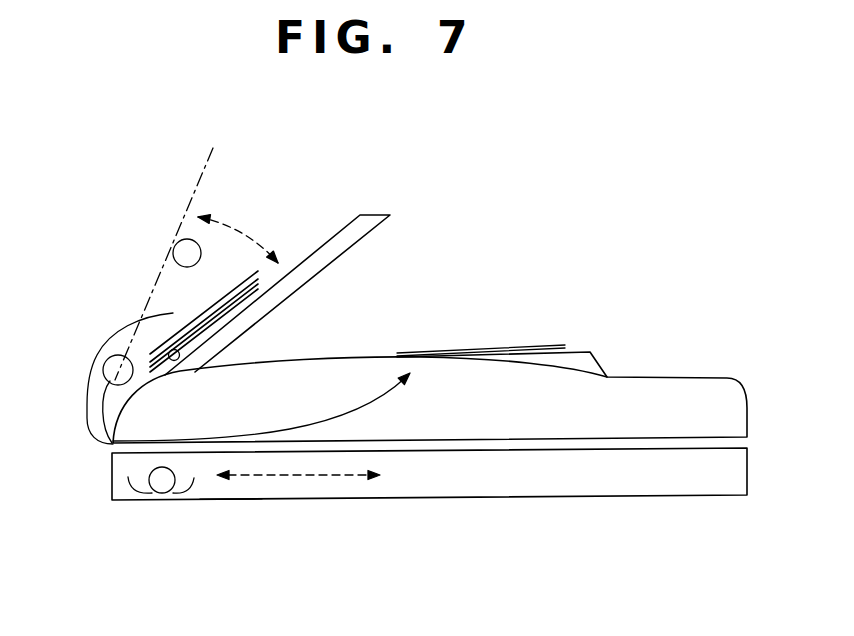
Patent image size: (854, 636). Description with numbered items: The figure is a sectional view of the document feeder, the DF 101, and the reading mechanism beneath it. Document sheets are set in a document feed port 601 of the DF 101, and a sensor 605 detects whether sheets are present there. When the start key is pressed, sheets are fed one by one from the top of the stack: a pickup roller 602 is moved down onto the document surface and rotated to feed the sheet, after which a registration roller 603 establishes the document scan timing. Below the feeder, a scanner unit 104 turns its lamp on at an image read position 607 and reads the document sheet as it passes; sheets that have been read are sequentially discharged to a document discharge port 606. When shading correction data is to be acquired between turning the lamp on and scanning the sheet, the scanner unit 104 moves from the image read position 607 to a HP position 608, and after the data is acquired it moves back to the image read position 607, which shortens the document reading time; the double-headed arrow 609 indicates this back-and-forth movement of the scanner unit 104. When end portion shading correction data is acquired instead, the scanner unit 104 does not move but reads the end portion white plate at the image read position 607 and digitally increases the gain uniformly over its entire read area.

The DF 101 is at (667, 378).
The scanner unit 104 is at (148, 468).
The document feed port 601 is at (264, 216).
The pickup roller 602 is at (175, 246).
The registration roller 603 is at (108, 356).
The sensor 605 is at (180, 355).
The document discharge port 606 is at (460, 342).
The image read position 607 is at (162, 512).
The HP position 608 is at (231, 512).
The scanning direction 609 is at (321, 477).